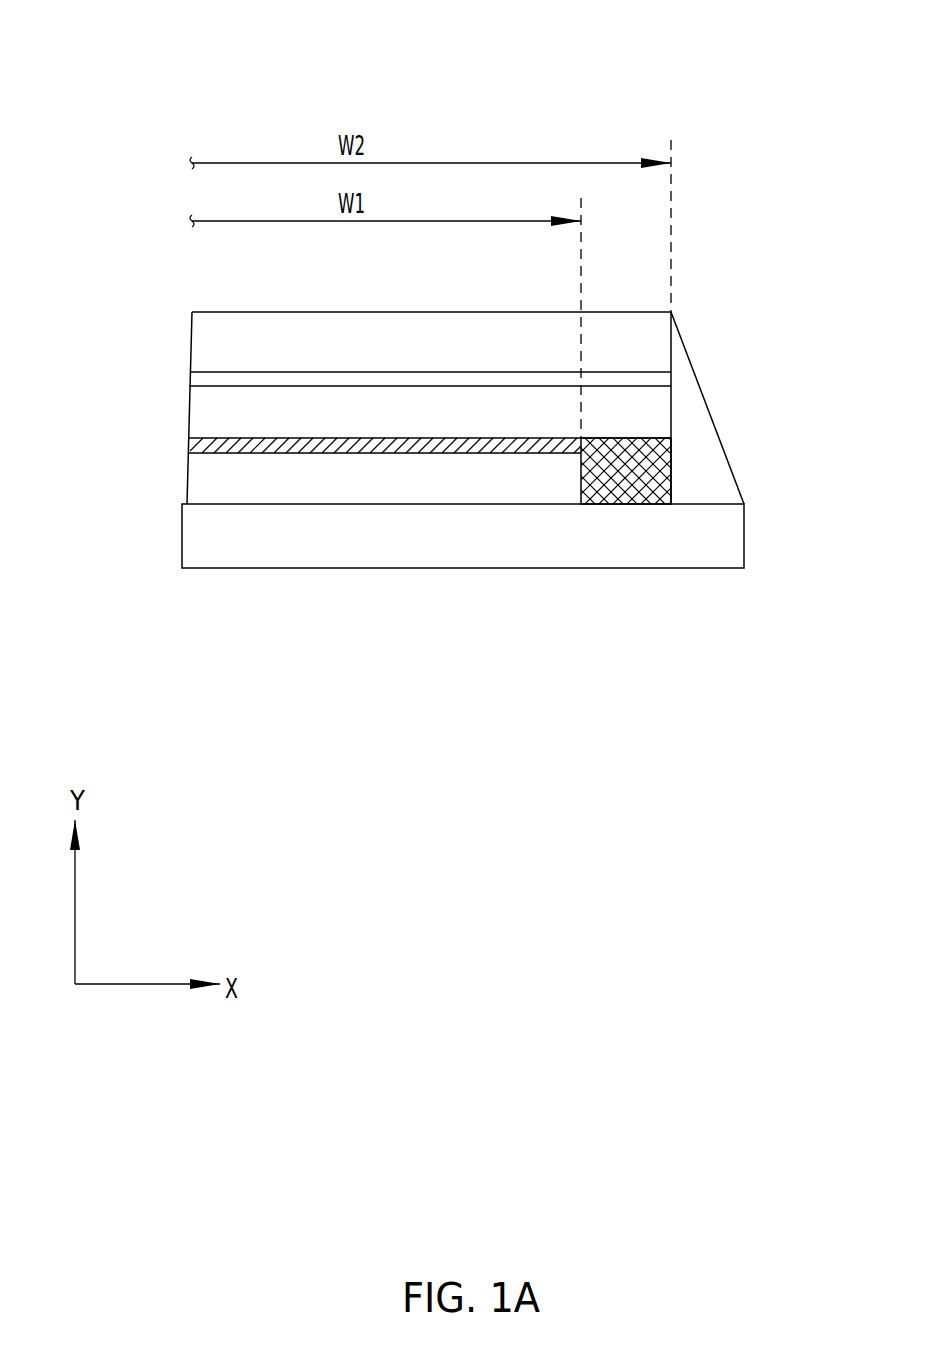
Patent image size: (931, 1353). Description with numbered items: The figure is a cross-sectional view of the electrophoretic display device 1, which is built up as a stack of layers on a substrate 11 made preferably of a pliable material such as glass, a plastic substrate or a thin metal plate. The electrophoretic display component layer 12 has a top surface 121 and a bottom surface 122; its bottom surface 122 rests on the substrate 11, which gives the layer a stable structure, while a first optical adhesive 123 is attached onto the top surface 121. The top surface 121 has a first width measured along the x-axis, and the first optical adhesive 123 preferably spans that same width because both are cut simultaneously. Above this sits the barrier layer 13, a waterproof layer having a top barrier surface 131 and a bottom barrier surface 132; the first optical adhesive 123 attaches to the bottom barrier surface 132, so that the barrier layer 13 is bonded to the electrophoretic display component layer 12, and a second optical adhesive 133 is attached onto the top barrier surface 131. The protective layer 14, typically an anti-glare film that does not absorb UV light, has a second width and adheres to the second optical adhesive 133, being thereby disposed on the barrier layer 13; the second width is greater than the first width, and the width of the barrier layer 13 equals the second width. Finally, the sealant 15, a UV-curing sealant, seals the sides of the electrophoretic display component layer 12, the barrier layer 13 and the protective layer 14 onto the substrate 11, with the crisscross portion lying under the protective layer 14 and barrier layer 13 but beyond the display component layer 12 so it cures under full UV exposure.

The electrophoretic display device 1 is at (214, 28).
The substrate 11 is at (630, 570).
The electrophoretic display component layer 12 is at (205, 488).
The top surface 121 is at (193, 462).
The bottom surface 122 is at (227, 505).
The first optical adhesive 123 is at (370, 442).
The barrier layer 13 is at (198, 412).
The top barrier surface 131 is at (203, 385).
The bottom barrier surface 132 is at (667, 450).
The second optical adhesive 133 is at (453, 380).
The protective layer 14 is at (200, 328).
The sealant 15 is at (702, 485).